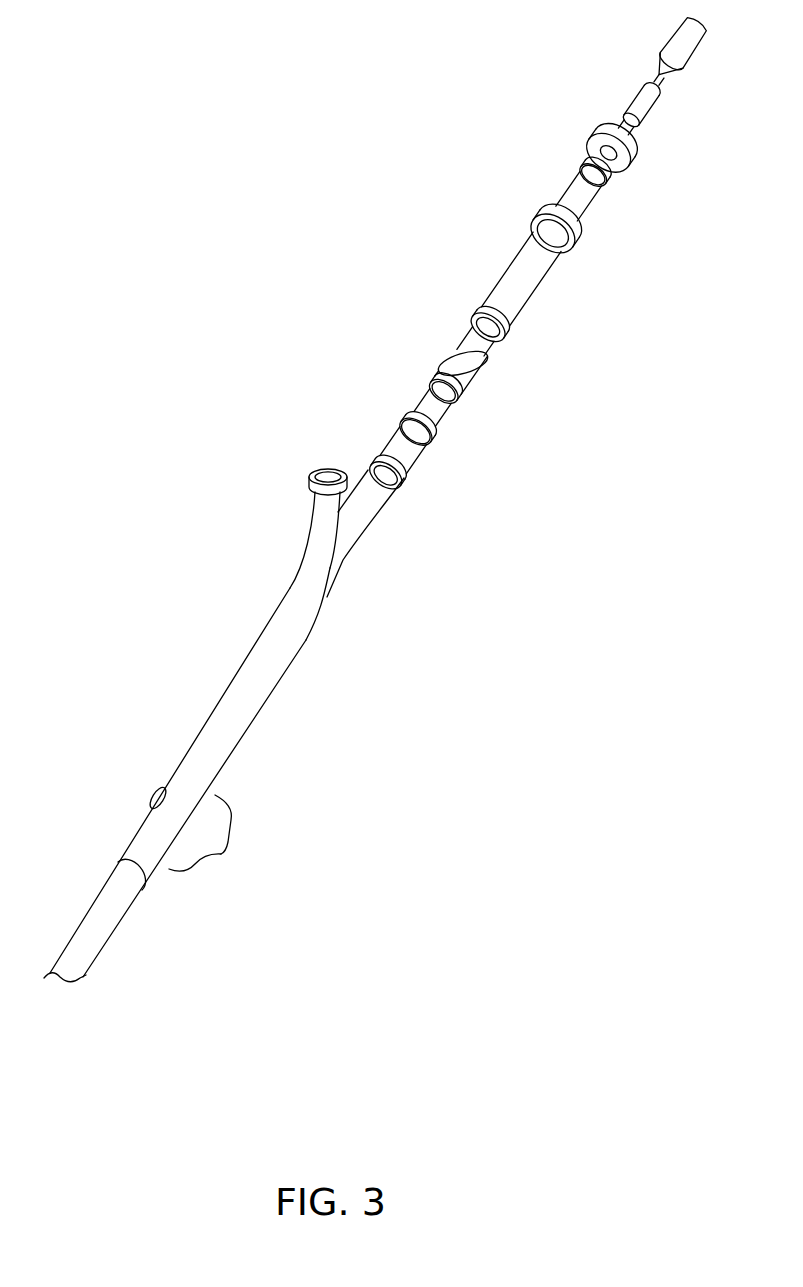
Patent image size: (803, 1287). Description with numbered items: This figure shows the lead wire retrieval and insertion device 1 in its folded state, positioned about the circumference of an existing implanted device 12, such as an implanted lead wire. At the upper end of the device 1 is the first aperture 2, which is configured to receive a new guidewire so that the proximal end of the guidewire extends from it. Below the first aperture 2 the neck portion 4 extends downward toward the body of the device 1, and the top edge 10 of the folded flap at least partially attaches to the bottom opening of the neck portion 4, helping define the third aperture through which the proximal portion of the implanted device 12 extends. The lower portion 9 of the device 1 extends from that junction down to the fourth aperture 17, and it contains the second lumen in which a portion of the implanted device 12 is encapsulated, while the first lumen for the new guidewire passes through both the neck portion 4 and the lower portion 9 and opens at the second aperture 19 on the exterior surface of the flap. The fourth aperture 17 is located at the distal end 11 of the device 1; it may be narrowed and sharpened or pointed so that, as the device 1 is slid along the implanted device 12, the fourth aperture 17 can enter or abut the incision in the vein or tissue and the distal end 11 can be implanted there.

The lead wire retrieval and insertion device 1 is at (219, 626).
The first aperture 2 is at (326, 468).
The neck portion 4 is at (323, 545).
The lower portion 9 is at (230, 717).
The top edge 10 is at (318, 593).
The distal end 11 is at (211, 836).
The implanted device 12 is at (360, 510).
The fourth aperture 17 is at (130, 850).
The second aperture 19 is at (150, 800).